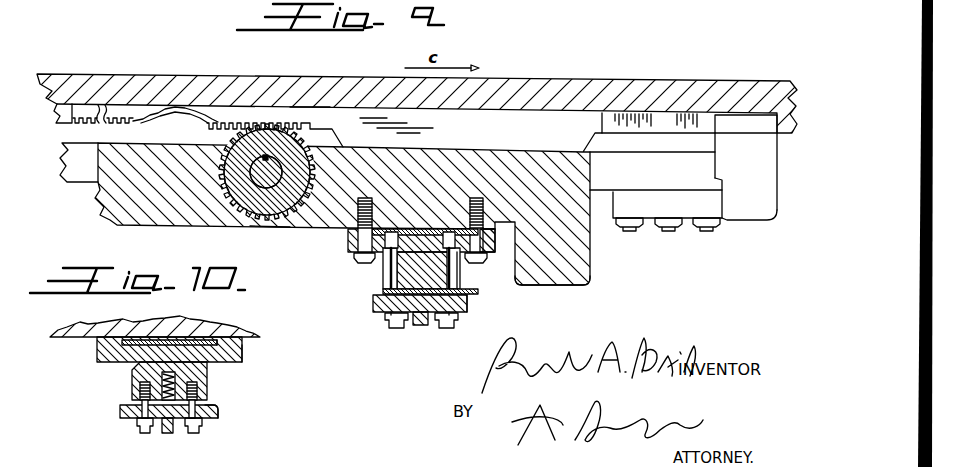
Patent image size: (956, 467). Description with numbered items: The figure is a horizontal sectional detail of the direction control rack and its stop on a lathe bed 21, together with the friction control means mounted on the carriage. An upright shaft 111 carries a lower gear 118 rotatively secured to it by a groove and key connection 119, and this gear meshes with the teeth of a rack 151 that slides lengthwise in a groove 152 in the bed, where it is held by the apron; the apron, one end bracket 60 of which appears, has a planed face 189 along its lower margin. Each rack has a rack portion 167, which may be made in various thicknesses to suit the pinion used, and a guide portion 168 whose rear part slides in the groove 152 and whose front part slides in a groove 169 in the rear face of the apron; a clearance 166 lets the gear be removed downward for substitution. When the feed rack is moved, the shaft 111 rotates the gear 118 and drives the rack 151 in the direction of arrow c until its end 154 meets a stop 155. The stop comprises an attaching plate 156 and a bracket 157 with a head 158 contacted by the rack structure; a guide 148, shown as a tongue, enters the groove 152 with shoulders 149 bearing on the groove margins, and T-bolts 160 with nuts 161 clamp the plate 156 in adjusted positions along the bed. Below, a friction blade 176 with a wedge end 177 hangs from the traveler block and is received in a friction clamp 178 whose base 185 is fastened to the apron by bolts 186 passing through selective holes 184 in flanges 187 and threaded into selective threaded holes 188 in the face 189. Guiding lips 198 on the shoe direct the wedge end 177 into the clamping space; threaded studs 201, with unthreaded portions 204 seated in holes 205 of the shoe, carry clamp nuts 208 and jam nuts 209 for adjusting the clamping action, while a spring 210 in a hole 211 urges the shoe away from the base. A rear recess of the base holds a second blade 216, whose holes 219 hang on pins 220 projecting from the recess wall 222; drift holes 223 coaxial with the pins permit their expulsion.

In FIG. 9, the bed 21 is at (77, 76).
In FIG. 9, the end bracket 60 is at (570, 287).
In FIG. 9, the upright shaft 111 is at (281, 168).
In FIG. 9, the lower gear 118 is at (270, 227).
In FIG. 9, the groove and key connection 119 is at (268, 158).
In FIG. 9, the guide 148 is at (745, 118).
In FIG. 9, the shoulders 149 is at (744, 134).
In FIG. 9, the rack 151 is at (308, 118).
In FIG. 9, the groove 152 is at (663, 118).
In FIG. 9, the end 154 is at (597, 118).
In FIG. 9, the stop 155 is at (748, 218).
In FIG. 9, the attaching plate 156 is at (648, 218).
In FIG. 9, the bracket 157 is at (742, 212).
In FIG. 9, the head 158 is at (715, 169).
In FIG. 9, the T-bolts 160 is at (632, 231).
In FIG. 9, the nuts 161 is at (619, 228).
In FIG. 9, the clearance 166 is at (162, 123).
In FIG. 9, the rack portion 167 is at (230, 123).
In FIG. 9, the guide portion 168 is at (514, 116).
In FIG. 9, the groove 169 is at (582, 143).
In FIG. 9, the friction blade 176 is at (373, 300).
In FIG. 9, the wedge end 177 is at (471, 293).
In FIG. 9, the friction clamp 178 is at (383, 290).
In FIG. 9, the holes 184 is at (491, 243).
In FIG. 9, the base 185 is at (454, 268).
In FIG. 10, the base 185 is at (217, 353).
In FIG. 9, the bolts 186 is at (362, 259).
In FIG. 9, the flanges 187 is at (353, 243).
In FIG. 10, the flanges 187 is at (237, 348).
In FIG. 9, the threaded holes 188 is at (360, 214).
In FIG. 9, the planed face 189 is at (208, 226).
In FIG. 10, the planed face 189 is at (70, 337).
In FIG. 9, the guiding lips 198 is at (382, 312).
In FIG. 9, the threaded studs 201 is at (398, 329).
In FIG. 10, the threaded studs 201 is at (142, 434).
In FIG. 10, the unthreaded portions 204 is at (213, 407).
In FIG. 10, the holes 205 is at (218, 413).
In FIG. 10, the clamp nuts 208 is at (136, 423).
In FIG. 10, the jam nuts 209 is at (153, 434).
In FIG. 10, the spring 210 is at (207, 380).
In FIG. 10, the hole 211 is at (207, 370).
In FIG. 9, the blade 216 is at (378, 229).
In FIG. 10, the blade 216 is at (207, 337).
In FIG. 9, the holes 219 is at (447, 231).
In FIG. 9, the pins 220 is at (393, 231).
In FIG. 9, the wall 222 is at (422, 229).
In FIG. 10, the wall 222 is at (132, 367).
In FIG. 9, the drift holes 223 is at (458, 282).